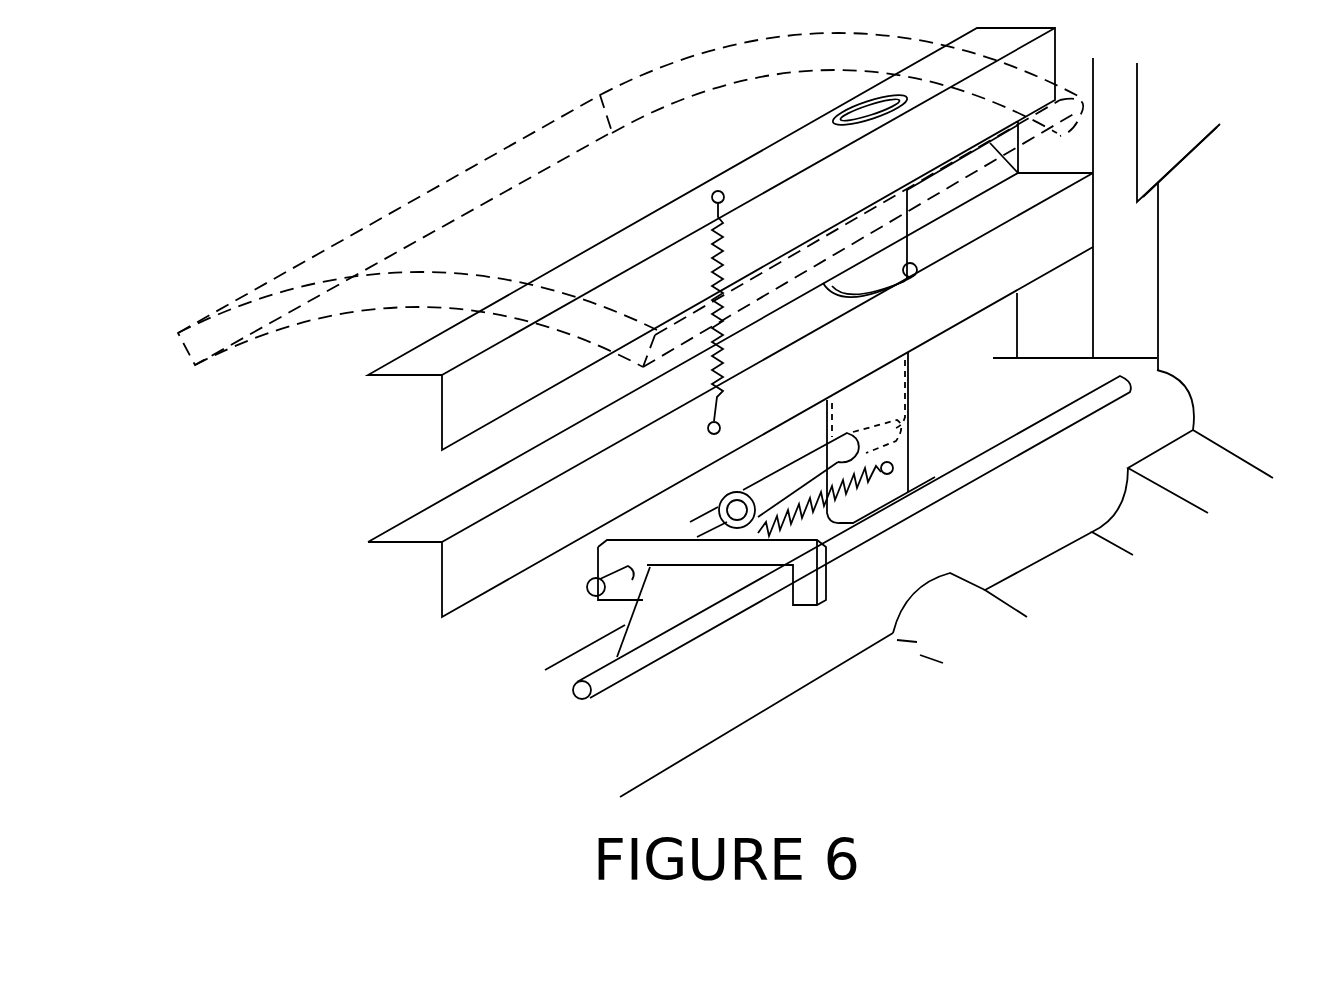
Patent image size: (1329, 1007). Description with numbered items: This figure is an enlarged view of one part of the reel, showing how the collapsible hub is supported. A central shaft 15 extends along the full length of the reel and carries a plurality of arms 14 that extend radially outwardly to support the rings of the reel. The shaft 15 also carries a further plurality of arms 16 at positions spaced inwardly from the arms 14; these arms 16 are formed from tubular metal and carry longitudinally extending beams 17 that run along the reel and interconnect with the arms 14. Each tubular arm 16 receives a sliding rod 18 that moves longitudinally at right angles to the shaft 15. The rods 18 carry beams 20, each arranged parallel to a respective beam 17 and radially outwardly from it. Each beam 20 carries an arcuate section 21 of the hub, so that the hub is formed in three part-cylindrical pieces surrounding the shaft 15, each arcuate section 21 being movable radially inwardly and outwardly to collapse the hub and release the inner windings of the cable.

The arms 14 is at (1067, 165).
The central shaft 15 is at (787, 662).
The arms 16 is at (892, 445).
The beams 17 is at (530, 521).
The sliding rod 18 is at (893, 260).
The beams 20 is at (585, 265).
The arcuate section 21 is at (500, 158).